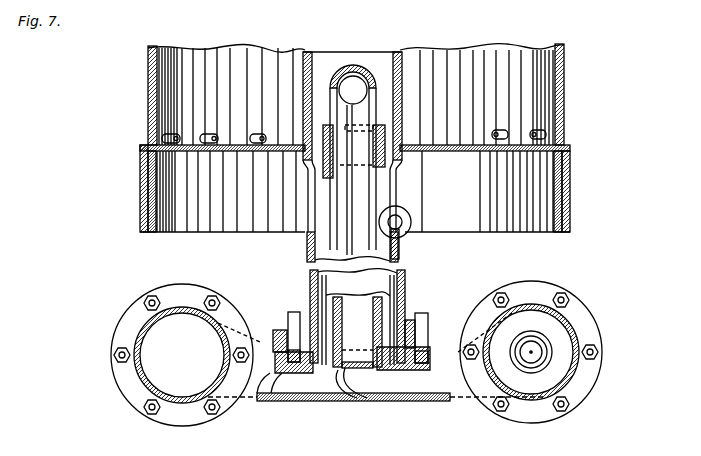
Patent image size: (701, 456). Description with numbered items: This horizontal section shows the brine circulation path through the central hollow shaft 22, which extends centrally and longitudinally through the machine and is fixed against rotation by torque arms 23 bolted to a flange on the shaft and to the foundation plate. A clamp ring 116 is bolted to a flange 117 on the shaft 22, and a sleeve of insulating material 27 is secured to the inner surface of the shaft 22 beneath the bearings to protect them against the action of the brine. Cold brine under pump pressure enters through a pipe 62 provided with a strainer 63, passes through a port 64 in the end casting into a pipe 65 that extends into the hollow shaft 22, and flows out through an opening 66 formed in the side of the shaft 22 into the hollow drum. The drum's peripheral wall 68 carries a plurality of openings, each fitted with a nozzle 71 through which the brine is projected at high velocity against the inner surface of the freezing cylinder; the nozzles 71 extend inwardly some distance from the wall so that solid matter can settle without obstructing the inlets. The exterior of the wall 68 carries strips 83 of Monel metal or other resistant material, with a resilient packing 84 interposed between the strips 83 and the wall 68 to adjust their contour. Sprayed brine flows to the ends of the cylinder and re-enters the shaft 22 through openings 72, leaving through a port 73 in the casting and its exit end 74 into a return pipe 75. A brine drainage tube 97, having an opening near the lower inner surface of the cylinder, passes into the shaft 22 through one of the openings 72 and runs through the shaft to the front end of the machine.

The hollow shaft 22 is at (402, 100).
The torque arms 23 is at (273, 340).
The sleeve of insulating material 27 is at (405, 295).
The pipe 62 is at (577, 330).
The strainer 63 is at (538, 338).
The port 64 is at (366, 373).
The pipe 65 is at (380, 202).
The opening 66 is at (372, 78).
The peripheral wall 68 is at (150, 92).
The nozzle 71 is at (257, 133).
The openings 72 is at (318, 187).
The port 73 is at (300, 402).
The exit end 74 is at (270, 402).
The return pipe 75 is at (143, 350).
The strips 83 is at (133, 200).
The resilient packing 84 is at (150, 175).
The brine drainage tube 97 is at (411, 230).
The clamp ring 116 is at (288, 314).
The flange 117 is at (273, 333).